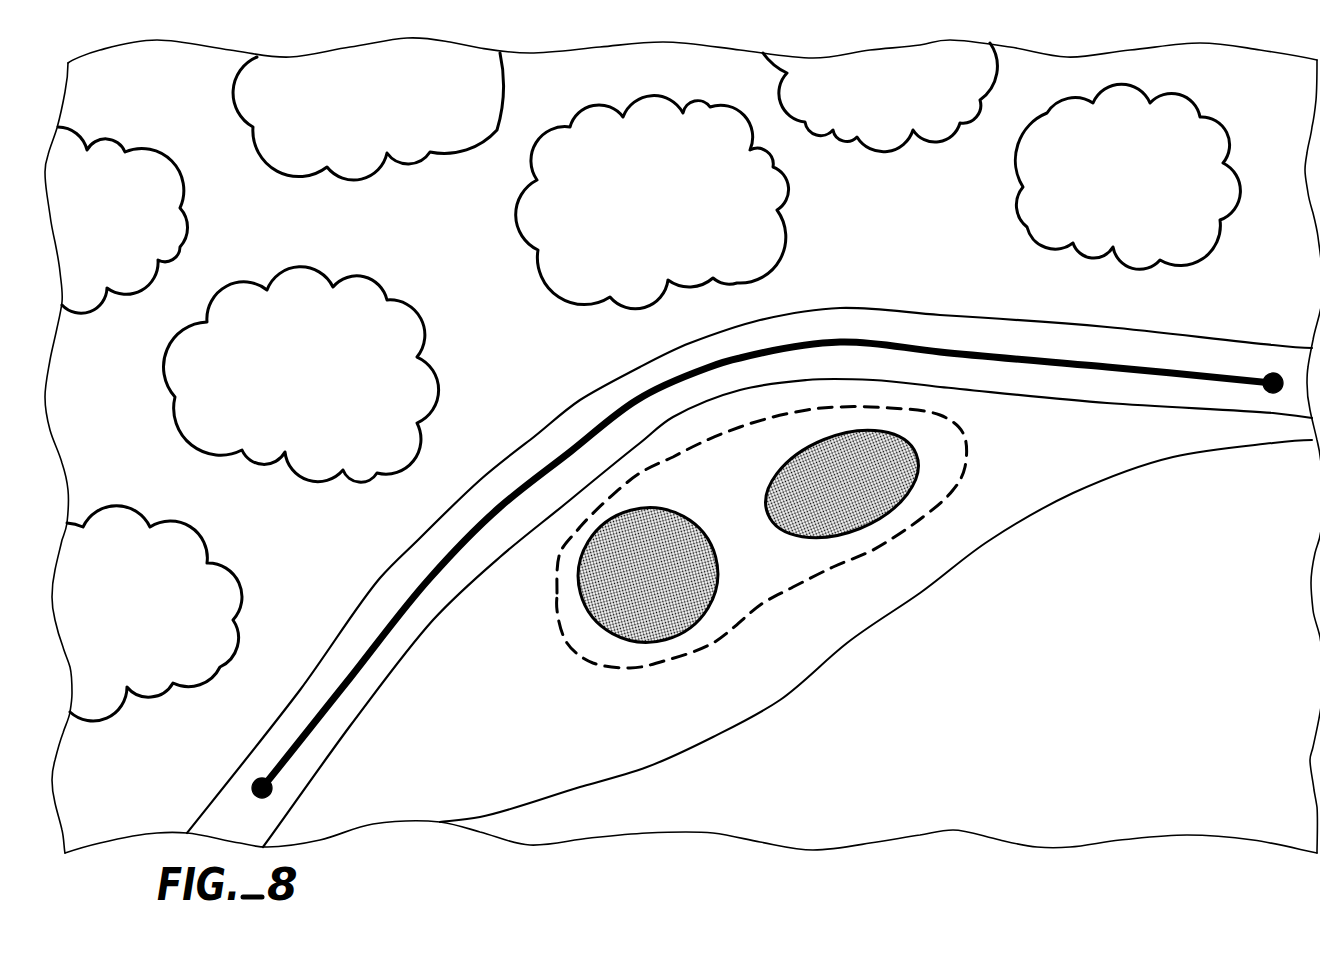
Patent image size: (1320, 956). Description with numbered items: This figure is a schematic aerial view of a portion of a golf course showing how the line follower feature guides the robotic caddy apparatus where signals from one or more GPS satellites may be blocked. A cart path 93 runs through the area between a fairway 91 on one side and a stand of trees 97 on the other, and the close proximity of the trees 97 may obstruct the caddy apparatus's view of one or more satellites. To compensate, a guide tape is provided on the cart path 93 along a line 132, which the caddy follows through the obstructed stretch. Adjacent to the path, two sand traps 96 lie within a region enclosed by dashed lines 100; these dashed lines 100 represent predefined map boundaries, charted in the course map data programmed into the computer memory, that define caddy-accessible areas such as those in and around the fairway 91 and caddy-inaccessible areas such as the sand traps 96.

The fairway 91 is at (1094, 692).
The cart path 93 is at (1066, 394).
The sand traps 96 is at (786, 487).
The trees 97 is at (348, 105).
The dashed lines 100 is at (574, 648).
The line 132 is at (1103, 363).